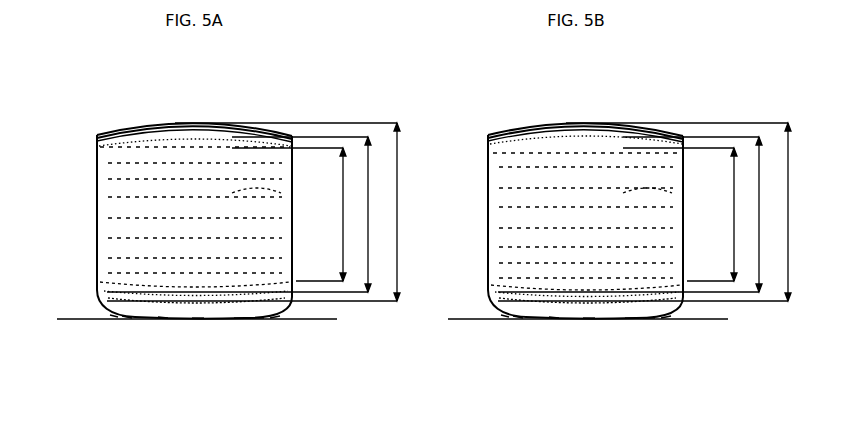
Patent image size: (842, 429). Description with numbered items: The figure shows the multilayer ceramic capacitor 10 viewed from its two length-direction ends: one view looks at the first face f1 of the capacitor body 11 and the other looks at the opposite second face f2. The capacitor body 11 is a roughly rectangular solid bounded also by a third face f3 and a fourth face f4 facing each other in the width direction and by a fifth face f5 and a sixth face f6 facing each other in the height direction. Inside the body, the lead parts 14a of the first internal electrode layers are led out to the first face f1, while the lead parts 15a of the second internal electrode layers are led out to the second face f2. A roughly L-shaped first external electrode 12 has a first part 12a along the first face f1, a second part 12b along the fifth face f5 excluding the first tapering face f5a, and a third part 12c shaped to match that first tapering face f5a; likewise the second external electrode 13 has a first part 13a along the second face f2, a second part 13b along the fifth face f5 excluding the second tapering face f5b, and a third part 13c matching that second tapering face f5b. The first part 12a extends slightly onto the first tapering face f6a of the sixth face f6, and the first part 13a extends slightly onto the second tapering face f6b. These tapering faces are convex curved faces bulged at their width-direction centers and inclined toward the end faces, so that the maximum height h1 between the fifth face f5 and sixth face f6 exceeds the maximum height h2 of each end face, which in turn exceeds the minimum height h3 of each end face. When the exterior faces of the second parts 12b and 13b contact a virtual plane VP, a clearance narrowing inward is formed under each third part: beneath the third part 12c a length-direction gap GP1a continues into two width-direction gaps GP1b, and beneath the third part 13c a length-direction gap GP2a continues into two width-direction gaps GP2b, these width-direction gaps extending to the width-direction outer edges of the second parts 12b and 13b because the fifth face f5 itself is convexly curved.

In FIG. 5A, the multilayer ceramic capacitor 10 is at (109, 127).
In FIG. 5B, the multilayer ceramic capacitor 10 is at (575, 199).
In FIG. 5A, the capacitor body 11 is at (152, 127).
In FIG. 5B, the capacitor body 11 is at (585, 109).
In FIG. 5A, the sixth face f6 is at (188, 125).
In FIG. 5B, the sixth face f6 is at (586, 116).
In FIG. 5A, the lead part 14a is at (222, 116).
In FIG. 5A, the first tapering face f6a is at (263, 128).
In FIG. 5A, the first external electrode 12 is at (97, 181).
In FIG. 5A, the first part 12a is at (130, 209).
In FIG. 5A, the fourth face f4 is at (97, 248).
In FIG. 5B, the fourth face f4 is at (705, 250).
In FIG. 5A, the first face f1 is at (284, 192).
In FIG. 5A, the third face f3 is at (292, 250).
In FIG. 5B, the third face f3 is at (461, 248).
In FIG. 5A, the minimum height-direction dimension h3 is at (297, 214).
In FIG. 5B, the minimum height-direction dimension h3 is at (688, 214).
In FIG. 5A, the maximum height-direction dimension of the first and second faces h2 is at (246, 214).
In FIG. 5B, the maximum height-direction dimension of the first and second faces h2 is at (637, 214).
In FIG. 5A, the maximum height-direction dimension h1 is at (259, 212).
In FIG. 5B, the maximum height-direction dimension h1 is at (650, 212).
In FIG. 5A, the virtual plane VP is at (185, 318).
In FIG. 5B, the virtual plane VP is at (576, 318).
In FIG. 5A, the width-direction gap GP1b is at (115, 317).
In FIG. 5A, the third part 12c is at (127, 313).
In FIG. 5A, the second part 12b is at (163, 317).
In FIG. 5A, the length-direction gap GP1a is at (198, 314).
In FIG. 5A, the fifth face f5 is at (242, 313).
In FIG. 5B, the fifth face f5 is at (633, 342).
In FIG. 5A, the first tapering face f5a is at (257, 314).
In FIG. 5B, the lead part 15a is at (586, 123).
In FIG. 5B, the second tapering face f6b is at (585, 110).
In FIG. 5B, the second external electrode 13 is at (553, 227).
In FIG. 5B, the first part 13a is at (553, 255).
In FIG. 5B, the second face f2 is at (674, 190).
In FIG. 5B, the width-direction gap GP2b is at (583, 338).
In FIG. 5B, the third part 13c is at (517, 342).
In FIG. 5B, the second part 13b is at (554, 344).
In FIG. 5B, the length-direction gap GP2a is at (599, 337).
In FIG. 5B, the second tapering face f5b is at (660, 342).